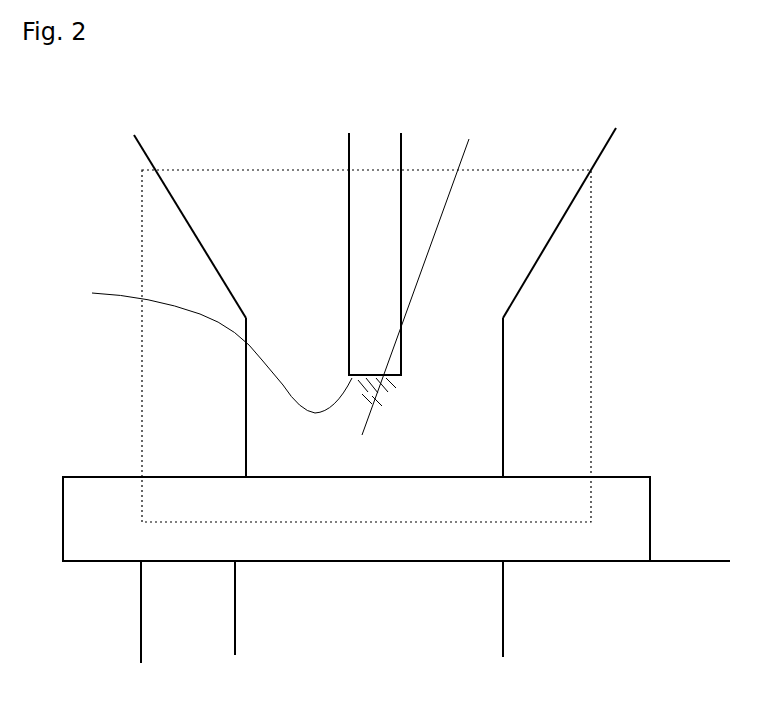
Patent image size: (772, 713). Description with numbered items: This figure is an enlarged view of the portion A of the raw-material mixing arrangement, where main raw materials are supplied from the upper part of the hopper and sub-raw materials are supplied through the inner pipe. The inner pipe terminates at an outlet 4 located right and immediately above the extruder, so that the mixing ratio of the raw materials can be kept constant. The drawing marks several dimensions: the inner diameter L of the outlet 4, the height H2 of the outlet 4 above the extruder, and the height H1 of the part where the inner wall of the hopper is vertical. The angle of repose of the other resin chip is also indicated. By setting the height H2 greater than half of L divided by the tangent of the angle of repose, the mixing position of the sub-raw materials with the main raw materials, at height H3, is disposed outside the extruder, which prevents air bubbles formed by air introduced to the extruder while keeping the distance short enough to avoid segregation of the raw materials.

The outlet 4 is at (212, 349).
The portion A is at (596, 309).
The inner diameter L is at (403, 122).
The height of vertical hopper inner wall part H1 is at (233, 320).
The height of outlet H2 is at (413, 375).
The mixing position height H3 is at (371, 416).